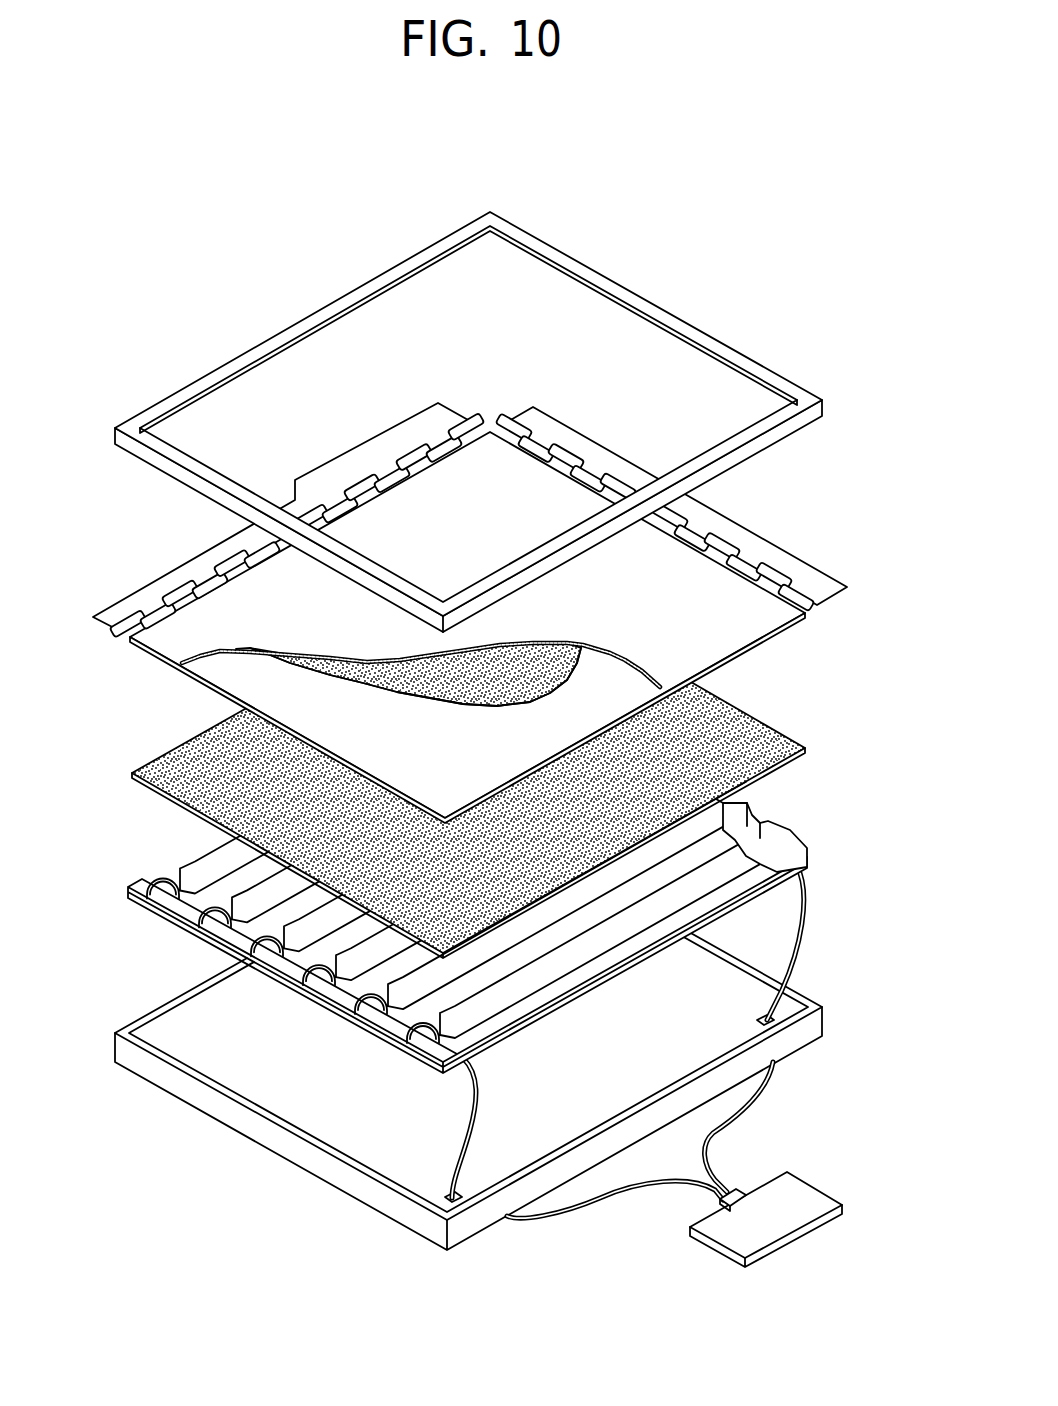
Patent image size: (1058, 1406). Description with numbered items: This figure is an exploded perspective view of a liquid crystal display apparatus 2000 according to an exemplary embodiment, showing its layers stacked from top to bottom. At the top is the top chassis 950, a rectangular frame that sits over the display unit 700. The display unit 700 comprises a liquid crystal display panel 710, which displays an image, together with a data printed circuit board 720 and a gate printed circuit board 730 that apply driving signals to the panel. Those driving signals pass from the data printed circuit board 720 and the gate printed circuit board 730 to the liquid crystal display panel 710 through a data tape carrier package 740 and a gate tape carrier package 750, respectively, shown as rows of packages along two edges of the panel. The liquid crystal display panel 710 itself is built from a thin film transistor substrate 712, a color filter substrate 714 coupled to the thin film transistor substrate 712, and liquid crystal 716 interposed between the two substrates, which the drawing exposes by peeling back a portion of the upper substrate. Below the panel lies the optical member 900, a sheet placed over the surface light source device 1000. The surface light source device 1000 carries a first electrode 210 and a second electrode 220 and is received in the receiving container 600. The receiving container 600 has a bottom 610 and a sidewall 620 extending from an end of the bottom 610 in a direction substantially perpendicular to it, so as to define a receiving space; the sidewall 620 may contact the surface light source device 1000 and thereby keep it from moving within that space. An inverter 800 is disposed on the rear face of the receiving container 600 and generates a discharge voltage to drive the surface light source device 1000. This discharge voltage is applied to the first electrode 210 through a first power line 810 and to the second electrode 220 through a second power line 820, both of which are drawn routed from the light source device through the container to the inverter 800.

The liquid crystal display apparatus 2000 is at (396, 192).
The top chassis 950 is at (144, 498).
The display unit 700 is at (471, 588).
The liquid crystal display panel 710 is at (505, 627).
The thin film transistor (TFT) substrate 712 is at (227, 678).
The color filter substrate 714 is at (718, 633).
The liquid crystal 716 is at (545, 662).
The data printed circuit board 720 is at (290, 496).
The gate printed circuit board 730 is at (671, 490).
The data tape carrier package 740 is at (452, 435).
The gate tape carrier package 750 is at (532, 438).
The optical member 900 is at (131, 804).
The surface light source device 1000 is at (476, 876).
The first electrode 210 is at (160, 866).
The second electrode 220 is at (775, 832).
The receiving container 600 is at (447, 1035).
The bottom 610 is at (367, 1152).
The sidewall 620 is at (240, 1118).
The inverter 800 is at (733, 1236).
The first power line 810 is at (573, 1212).
The second power line 820 is at (715, 1157).